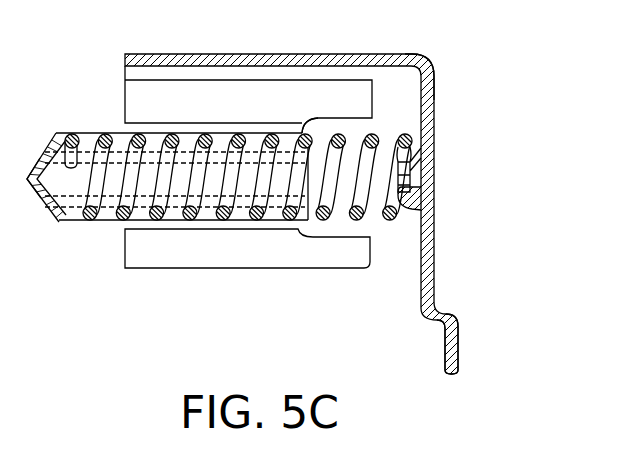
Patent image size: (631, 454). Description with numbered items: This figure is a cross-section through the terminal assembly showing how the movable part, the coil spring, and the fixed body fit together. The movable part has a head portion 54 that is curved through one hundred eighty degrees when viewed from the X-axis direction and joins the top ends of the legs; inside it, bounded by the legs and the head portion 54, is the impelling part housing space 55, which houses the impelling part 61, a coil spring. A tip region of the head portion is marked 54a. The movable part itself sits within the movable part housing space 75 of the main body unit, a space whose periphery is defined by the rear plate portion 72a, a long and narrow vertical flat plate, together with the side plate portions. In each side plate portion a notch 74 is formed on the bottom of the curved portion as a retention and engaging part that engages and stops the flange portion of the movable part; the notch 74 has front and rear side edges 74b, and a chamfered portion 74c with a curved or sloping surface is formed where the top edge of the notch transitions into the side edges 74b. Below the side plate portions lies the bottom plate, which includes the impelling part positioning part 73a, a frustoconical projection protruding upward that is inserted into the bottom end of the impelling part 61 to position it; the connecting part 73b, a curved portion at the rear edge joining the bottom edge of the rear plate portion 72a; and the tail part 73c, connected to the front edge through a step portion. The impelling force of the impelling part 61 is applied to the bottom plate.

The head portion 54 is at (43, 210).
The tip portion of spring seat 54a is at (27, 177).
The impelling part housing space 55 is at (77, 188).
The impelling part 61 is at (102, 153).
The rear plate portion 72a is at (200, 53).
The movable part housing space 75 is at (162, 90).
The notch 74 is at (342, 218).
The side edge 74b is at (342, 118).
The chamfered portion 74c is at (300, 118).
The impelling part positioning part 73a is at (415, 200).
The connecting part 73b is at (418, 52).
The tail part 73c is at (445, 357).